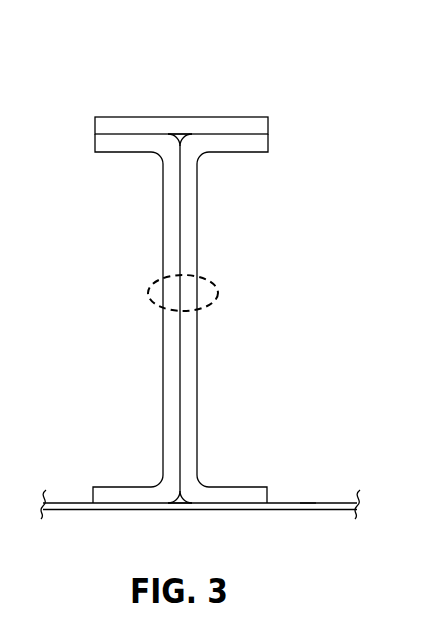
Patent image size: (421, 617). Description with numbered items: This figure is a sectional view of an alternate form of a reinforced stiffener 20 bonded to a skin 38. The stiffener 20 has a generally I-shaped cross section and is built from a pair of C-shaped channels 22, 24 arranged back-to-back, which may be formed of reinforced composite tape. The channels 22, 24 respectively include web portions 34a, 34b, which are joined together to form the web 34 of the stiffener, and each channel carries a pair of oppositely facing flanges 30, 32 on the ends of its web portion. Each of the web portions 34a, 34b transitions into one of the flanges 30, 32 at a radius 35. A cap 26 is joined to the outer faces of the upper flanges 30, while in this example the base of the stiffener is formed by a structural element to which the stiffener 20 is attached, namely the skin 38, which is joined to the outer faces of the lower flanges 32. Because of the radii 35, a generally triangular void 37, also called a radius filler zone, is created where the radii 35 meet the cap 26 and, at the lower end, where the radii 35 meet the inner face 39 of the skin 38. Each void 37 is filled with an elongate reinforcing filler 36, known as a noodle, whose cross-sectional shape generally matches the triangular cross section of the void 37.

The reinforced stiffener 20 is at (110, 77).
The C-shaped channel 22 is at (147, 355).
The C-shaped channel 24 is at (213, 355).
The cap 26 is at (213, 127).
The flange 30 is at (110, 144).
The flange 32 is at (108, 492).
The web 34 is at (219, 293).
The web portion 34a is at (170, 248).
The web portion 34b is at (188, 243).
The radius 35 is at (168, 148).
The reinforcing filler 36 is at (176, 133).
The void 37 is at (172, 131).
The skin 38 is at (87, 510).
The inner face 39 is at (308, 502).